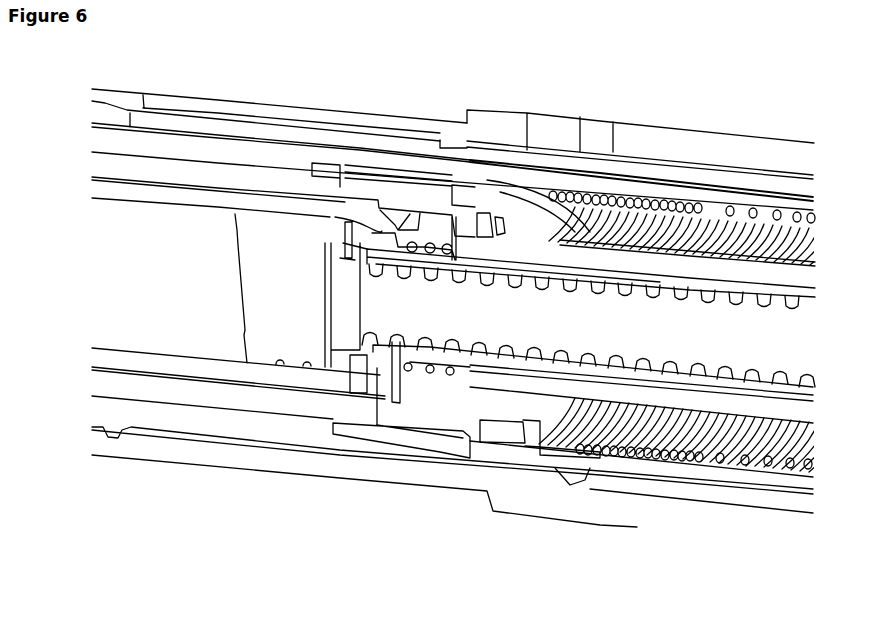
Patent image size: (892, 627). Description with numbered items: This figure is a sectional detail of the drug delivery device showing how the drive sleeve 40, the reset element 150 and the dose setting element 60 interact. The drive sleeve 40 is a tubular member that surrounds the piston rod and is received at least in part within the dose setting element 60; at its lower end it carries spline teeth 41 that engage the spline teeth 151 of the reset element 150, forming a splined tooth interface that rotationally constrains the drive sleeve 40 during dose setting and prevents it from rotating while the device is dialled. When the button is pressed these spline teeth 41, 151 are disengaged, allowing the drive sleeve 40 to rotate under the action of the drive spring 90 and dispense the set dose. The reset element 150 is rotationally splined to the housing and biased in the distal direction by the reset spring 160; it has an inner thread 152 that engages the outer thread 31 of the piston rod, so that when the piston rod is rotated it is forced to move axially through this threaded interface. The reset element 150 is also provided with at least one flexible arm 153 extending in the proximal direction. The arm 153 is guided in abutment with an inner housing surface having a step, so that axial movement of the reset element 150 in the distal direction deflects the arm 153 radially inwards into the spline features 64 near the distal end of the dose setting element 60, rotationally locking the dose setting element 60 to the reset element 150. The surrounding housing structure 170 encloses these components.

The outer thread 31 is at (710, 368).
The drive sleeve 40 is at (685, 398).
The spline teeth 41 is at (498, 233).
The dose setting element 60 is at (747, 197).
The spline features 64 is at (548, 457).
The drive spring 90 is at (707, 212).
The reset element 150 is at (447, 405).
The spline teeth 151 is at (487, 223).
The inner thread 152 is at (396, 344).
The flexible arm 153 is at (577, 478).
The reset spring 160 is at (503, 430).
The housing 170 is at (180, 414).